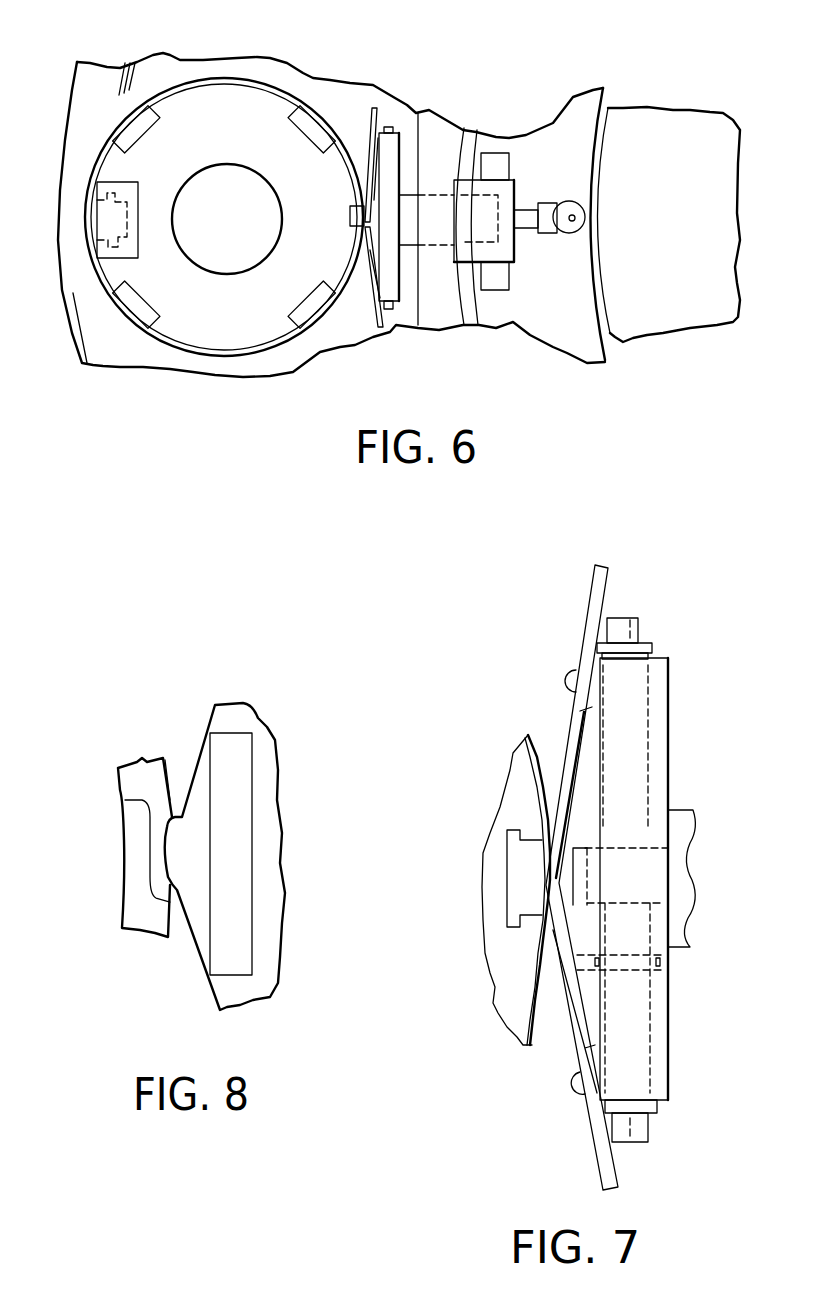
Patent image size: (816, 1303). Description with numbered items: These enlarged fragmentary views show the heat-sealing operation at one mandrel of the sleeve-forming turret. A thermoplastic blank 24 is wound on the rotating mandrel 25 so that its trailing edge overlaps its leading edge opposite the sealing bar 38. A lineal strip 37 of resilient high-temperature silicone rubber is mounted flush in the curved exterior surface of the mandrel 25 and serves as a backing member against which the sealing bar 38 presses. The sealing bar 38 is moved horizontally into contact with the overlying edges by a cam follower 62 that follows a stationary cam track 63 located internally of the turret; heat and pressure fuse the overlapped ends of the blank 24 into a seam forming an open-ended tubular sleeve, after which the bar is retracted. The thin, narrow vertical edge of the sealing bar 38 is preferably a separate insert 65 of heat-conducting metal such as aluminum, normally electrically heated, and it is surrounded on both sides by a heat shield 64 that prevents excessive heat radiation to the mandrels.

In FIG. 6, the blank 24 is at (228, 363).
In FIG. 8, the blank 24 is at (123, 903).
In FIG. 7, the blank 24 is at (535, 1013).
In FIG. 6, the mandrel 25 is at (188, 330).
In FIG. 7, the mandrel 25 is at (503, 973).
In FIG. 7, the lineal strip of resilient material 37 is at (513, 890).
In FIG. 6, the sealing bar 38 is at (400, 297).
In FIG. 8, the sealing bar 38 is at (280, 850).
In FIG. 7, the sealing bar 38 is at (670, 745).
In FIG. 6, the cam follower 62 is at (562, 237).
In FIG. 6, the stationary cam track 63 is at (602, 307).
In FIG. 6, the heat shield 64 is at (380, 118).
In FIG. 7, the heat shield 64 is at (608, 586).
In FIG. 8, the insert 65 is at (223, 753).
In FIG. 7, the insert 65 is at (567, 867).